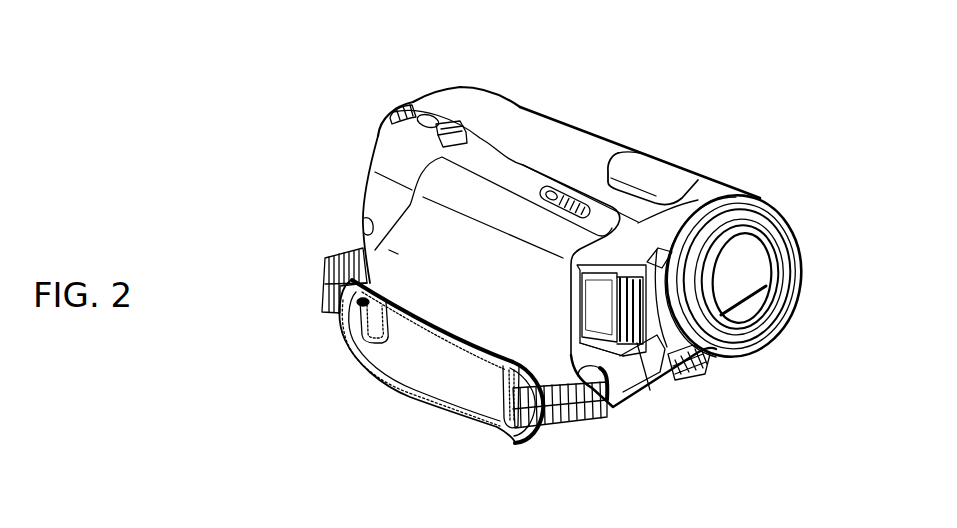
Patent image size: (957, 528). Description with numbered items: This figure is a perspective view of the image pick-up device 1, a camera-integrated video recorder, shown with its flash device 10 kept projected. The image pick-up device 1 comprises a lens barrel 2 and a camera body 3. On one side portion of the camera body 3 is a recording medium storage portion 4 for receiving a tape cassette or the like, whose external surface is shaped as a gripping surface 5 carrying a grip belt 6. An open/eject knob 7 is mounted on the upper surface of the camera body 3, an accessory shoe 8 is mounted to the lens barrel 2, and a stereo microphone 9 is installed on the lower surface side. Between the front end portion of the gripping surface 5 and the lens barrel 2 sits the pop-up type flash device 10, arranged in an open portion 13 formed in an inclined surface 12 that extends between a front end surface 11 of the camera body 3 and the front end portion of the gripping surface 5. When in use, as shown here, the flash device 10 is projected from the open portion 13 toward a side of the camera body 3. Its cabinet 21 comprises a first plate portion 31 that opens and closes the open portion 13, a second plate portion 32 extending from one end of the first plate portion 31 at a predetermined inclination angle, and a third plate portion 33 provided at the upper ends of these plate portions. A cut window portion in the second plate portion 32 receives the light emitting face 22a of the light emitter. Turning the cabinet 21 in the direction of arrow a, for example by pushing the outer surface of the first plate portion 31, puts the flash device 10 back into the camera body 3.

The image pick-up device 1 is at (342, 91).
The lens barrel 2 is at (598, 147).
The camera body 3 is at (398, 152).
The recording medium storage portion 4 is at (386, 210).
The gripping surface 5 is at (389, 250).
The grip belt 6 is at (420, 372).
The open/eject knob 7 is at (568, 192).
The accessory shoe 8 is at (647, 172).
The stereo microphone 9 is at (693, 373).
The flash device 10 is at (605, 360).
The front end surface 11 is at (677, 383).
The inclined surface 12 is at (616, 367).
The open portion 13 is at (565, 385).
The cabinet 21 is at (830, 132).
The light emitting face 22a is at (650, 300).
The first plate portion 31 is at (608, 292).
The second plate portion 32 is at (660, 250).
The third plate portion 33 is at (617, 262).
The arrow a is at (553, 332).